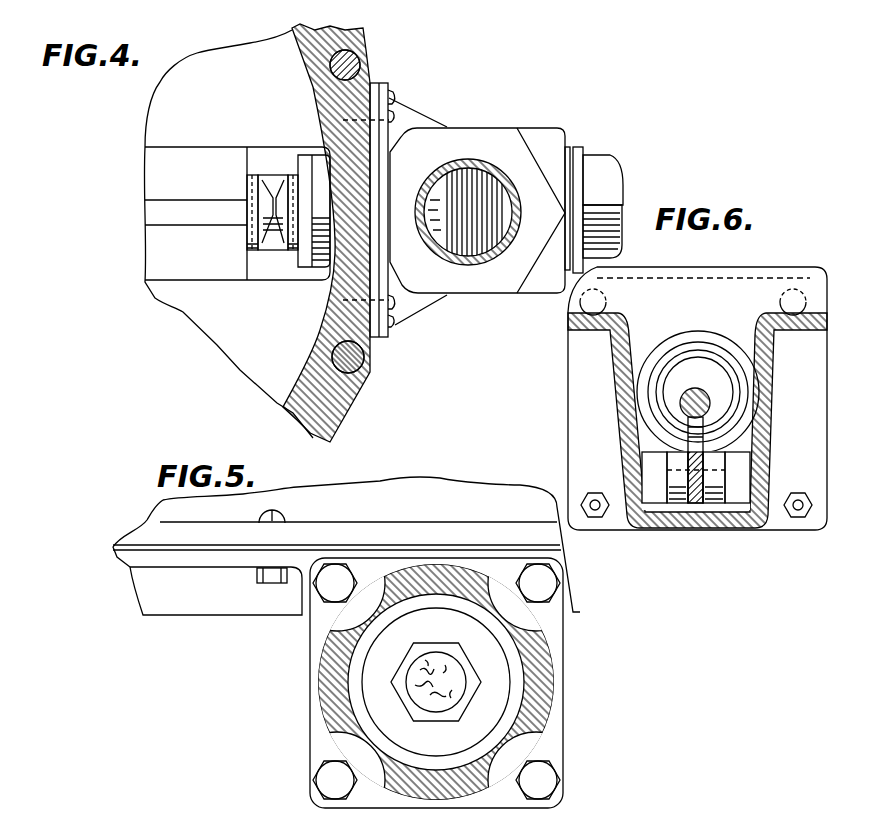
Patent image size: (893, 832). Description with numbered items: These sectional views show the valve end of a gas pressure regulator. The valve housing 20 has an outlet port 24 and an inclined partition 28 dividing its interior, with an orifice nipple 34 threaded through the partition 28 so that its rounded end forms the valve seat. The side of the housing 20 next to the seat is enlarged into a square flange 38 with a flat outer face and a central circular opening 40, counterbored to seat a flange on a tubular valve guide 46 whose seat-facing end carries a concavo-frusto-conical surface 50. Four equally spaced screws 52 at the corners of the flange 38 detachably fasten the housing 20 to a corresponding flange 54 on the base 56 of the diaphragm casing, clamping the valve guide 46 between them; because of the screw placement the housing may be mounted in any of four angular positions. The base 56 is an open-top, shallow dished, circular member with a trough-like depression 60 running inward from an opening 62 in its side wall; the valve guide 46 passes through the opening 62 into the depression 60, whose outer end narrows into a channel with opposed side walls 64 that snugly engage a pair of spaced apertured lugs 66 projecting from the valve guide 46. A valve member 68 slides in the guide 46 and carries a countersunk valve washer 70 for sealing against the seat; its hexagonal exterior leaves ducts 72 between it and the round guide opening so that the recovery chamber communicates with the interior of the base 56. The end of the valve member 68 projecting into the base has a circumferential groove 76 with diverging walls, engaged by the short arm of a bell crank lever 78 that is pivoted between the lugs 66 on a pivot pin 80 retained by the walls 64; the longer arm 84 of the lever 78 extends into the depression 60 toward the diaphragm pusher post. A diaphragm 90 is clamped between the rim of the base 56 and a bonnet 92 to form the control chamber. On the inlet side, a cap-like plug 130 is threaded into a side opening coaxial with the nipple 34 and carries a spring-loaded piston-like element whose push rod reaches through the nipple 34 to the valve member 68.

In FIG. 4, the valve housing 20 is at (562, 128).
In FIG. 5, the valve housing 20 is at (555, 680).
In FIG. 4, the outlet port 24 is at (478, 165).
In FIG. 4, the transverse wall or partition 28 is at (509, 290).
In FIG. 4, the orifice fitting or nipple 34 is at (457, 128).
In FIG. 4, the square flange 38 is at (387, 333).
In FIG. 5, the square flange 38 is at (567, 732).
In FIG. 5, the central circular opening 40 is at (423, 738).
In FIG. 6, the tubular valve guide 46 is at (742, 383).
In FIG. 5, the concavo-frusto-conical surface 50 is at (495, 672).
In FIG. 5, the screws 52 is at (327, 592).
In FIG. 4, the flange 54 is at (389, 321).
In FIG. 6, the flange 54 is at (577, 412).
In FIG. 4, the base 56 is at (352, 416).
In FIG. 5, the base 56 is at (212, 618).
In FIG. 4, the trough-like depression 60 is at (157, 266).
In FIG. 6, the trough-like depression 60 is at (711, 512).
In FIG. 6, the opening 62 is at (742, 365).
In FIG. 4, the opposed side walls 64 is at (270, 175).
In FIG. 6, the opposed side walls 64 is at (670, 478).
In FIG. 4, the apertured lugs 66 is at (282, 185).
In FIG. 6, the apertured lugs 66 is at (718, 506).
In FIG. 4, the valve member or head 68 is at (247, 240).
In FIG. 6, the valve member or head 68 is at (725, 405).
In FIG. 5, the valve member or head 68 is at (480, 683).
In FIG. 5, the valve washer 70 is at (413, 688).
In FIG. 6, the ducts 72 is at (660, 423).
In FIG. 5, the ducts 72 is at (470, 655).
In FIG. 4, the circumferential groove 76 is at (273, 210).
In FIG. 4, the bell crank lever 78 is at (180, 182).
In FIG. 6, the bell crank lever 78 is at (703, 448).
In FIG. 6, the pivot pin 80 is at (675, 512).
In FIG. 4, the longer arm 84 is at (190, 228).
In FIG. 6, the longer arm 84 is at (692, 505).
In FIG. 5, the diaphragm 90 is at (197, 547).
In FIG. 5, the diaphragm-casing cap or bonnet 92 is at (451, 485).
In FIG. 4, the cap-like plug 130 is at (612, 190).